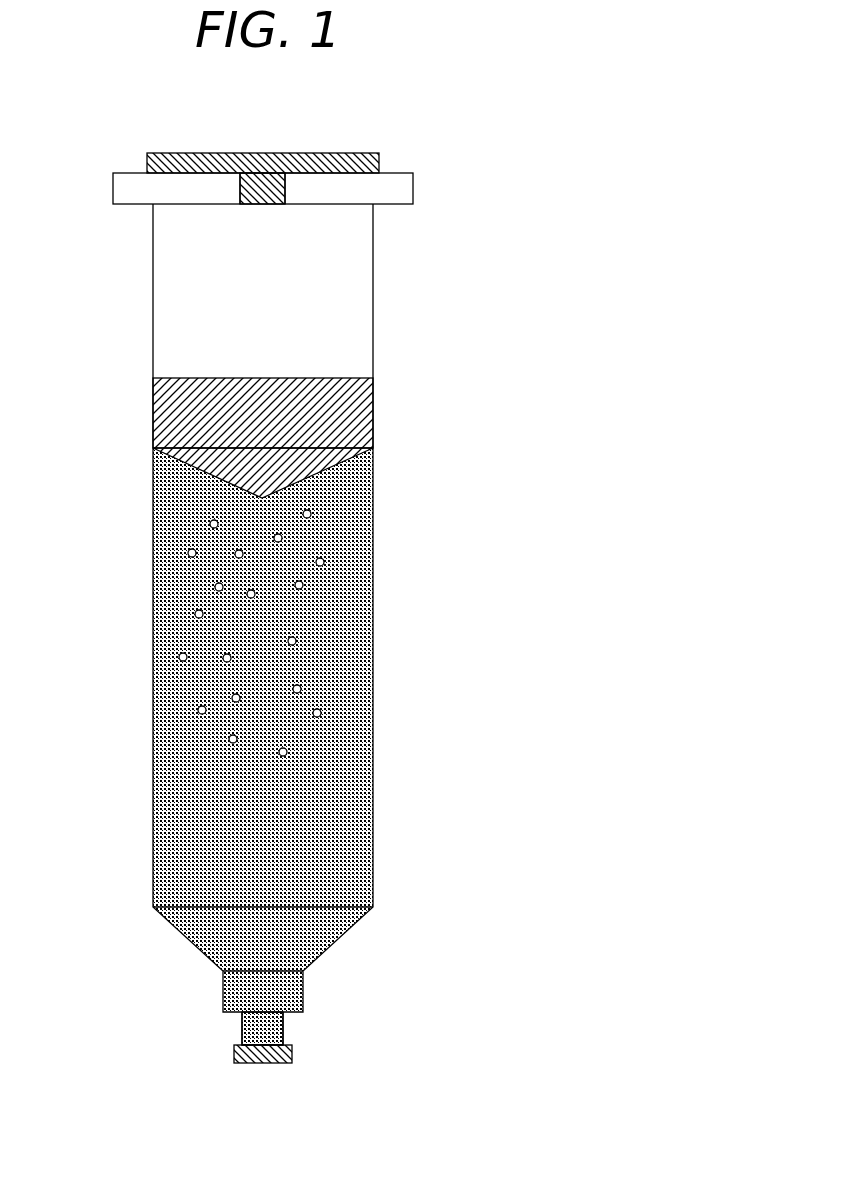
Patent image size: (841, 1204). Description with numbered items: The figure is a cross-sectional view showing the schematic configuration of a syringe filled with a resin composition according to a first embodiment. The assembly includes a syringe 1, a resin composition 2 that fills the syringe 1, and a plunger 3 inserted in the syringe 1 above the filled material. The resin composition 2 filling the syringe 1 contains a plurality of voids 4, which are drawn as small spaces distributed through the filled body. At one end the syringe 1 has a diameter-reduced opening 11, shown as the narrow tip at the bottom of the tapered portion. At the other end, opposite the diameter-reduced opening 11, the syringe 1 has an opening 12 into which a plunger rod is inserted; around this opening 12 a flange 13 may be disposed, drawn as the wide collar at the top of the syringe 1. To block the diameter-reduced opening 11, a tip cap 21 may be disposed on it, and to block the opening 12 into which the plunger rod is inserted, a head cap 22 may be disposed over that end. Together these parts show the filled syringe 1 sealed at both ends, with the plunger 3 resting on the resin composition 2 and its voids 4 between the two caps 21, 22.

The syringe 1 is at (153, 745).
The resin composition 2 is at (330, 812).
The plunger 3 is at (153, 420).
The voids 4 is at (295, 639).
The diameter-reduced opening 11 is at (285, 1035).
The opening 12 is at (287, 196).
The flange 13 is at (128, 185).
The tip cap 21 is at (235, 1060).
The head cap 22 is at (177, 153).